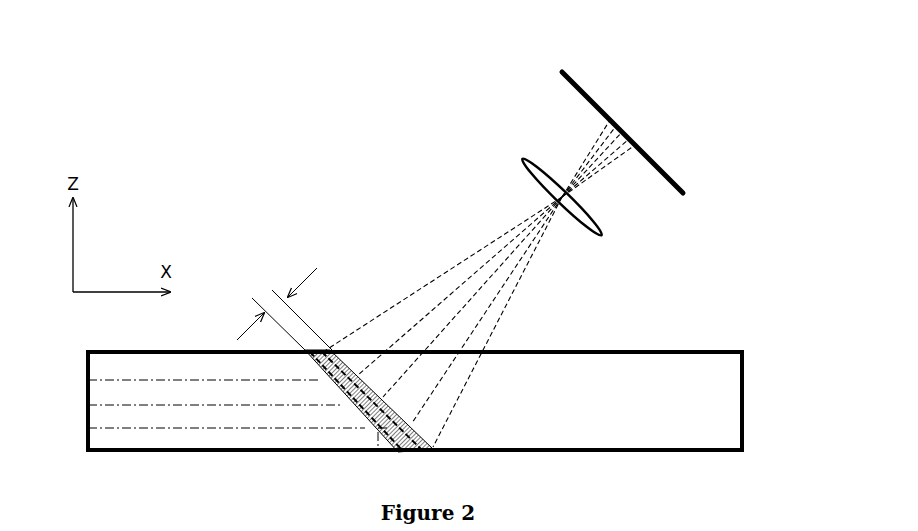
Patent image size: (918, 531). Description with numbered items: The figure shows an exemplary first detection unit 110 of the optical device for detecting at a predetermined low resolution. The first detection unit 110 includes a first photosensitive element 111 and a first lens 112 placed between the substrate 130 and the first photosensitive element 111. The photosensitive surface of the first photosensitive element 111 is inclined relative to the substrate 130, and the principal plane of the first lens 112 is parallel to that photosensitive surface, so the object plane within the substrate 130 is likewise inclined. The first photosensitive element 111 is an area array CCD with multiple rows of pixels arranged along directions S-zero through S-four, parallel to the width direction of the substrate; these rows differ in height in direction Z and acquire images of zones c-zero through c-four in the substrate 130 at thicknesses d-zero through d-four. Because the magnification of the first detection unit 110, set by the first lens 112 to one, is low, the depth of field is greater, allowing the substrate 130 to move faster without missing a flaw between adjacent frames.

The first detection unit 110 is at (328, 27).
The first photosensitive element 111 is at (560, 80).
The first lens 112 is at (525, 162).
The substrate 130 is at (583, 362).